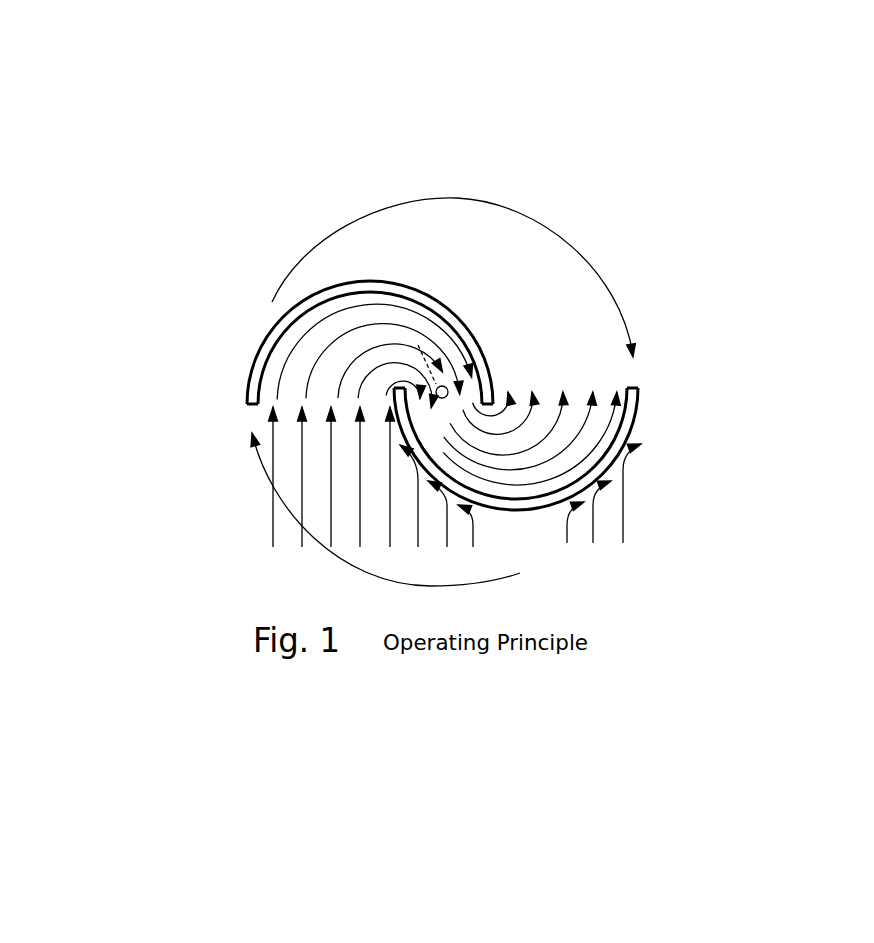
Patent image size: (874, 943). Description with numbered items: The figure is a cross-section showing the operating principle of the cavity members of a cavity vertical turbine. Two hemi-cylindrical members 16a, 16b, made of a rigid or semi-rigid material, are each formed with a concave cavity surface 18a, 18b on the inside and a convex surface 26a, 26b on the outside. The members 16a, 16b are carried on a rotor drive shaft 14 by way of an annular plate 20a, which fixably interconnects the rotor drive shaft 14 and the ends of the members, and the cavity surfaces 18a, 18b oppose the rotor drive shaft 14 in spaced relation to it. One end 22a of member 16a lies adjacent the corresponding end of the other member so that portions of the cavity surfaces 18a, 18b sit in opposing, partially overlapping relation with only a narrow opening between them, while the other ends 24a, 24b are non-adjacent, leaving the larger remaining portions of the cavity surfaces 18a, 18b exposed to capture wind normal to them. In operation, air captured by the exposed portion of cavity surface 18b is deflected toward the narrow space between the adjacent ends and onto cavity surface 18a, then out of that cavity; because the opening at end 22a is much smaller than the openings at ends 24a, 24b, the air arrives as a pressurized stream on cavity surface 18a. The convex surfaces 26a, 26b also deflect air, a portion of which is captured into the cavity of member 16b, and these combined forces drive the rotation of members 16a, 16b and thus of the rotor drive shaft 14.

The rotor drive shaft 14 is at (448, 385).
The hemi-cylindrical member 16a is at (643, 440).
The hemi-cylindrical member 16b is at (253, 360).
The cavity surface 18a is at (590, 471).
The cavity surface 18b is at (290, 327).
The annular plate 20a is at (418, 345).
The end 22a is at (460, 428).
The end 24a is at (640, 407).
The end 24b is at (248, 390).
The convex surface 26a is at (533, 511).
The convex surface 26b is at (368, 280).